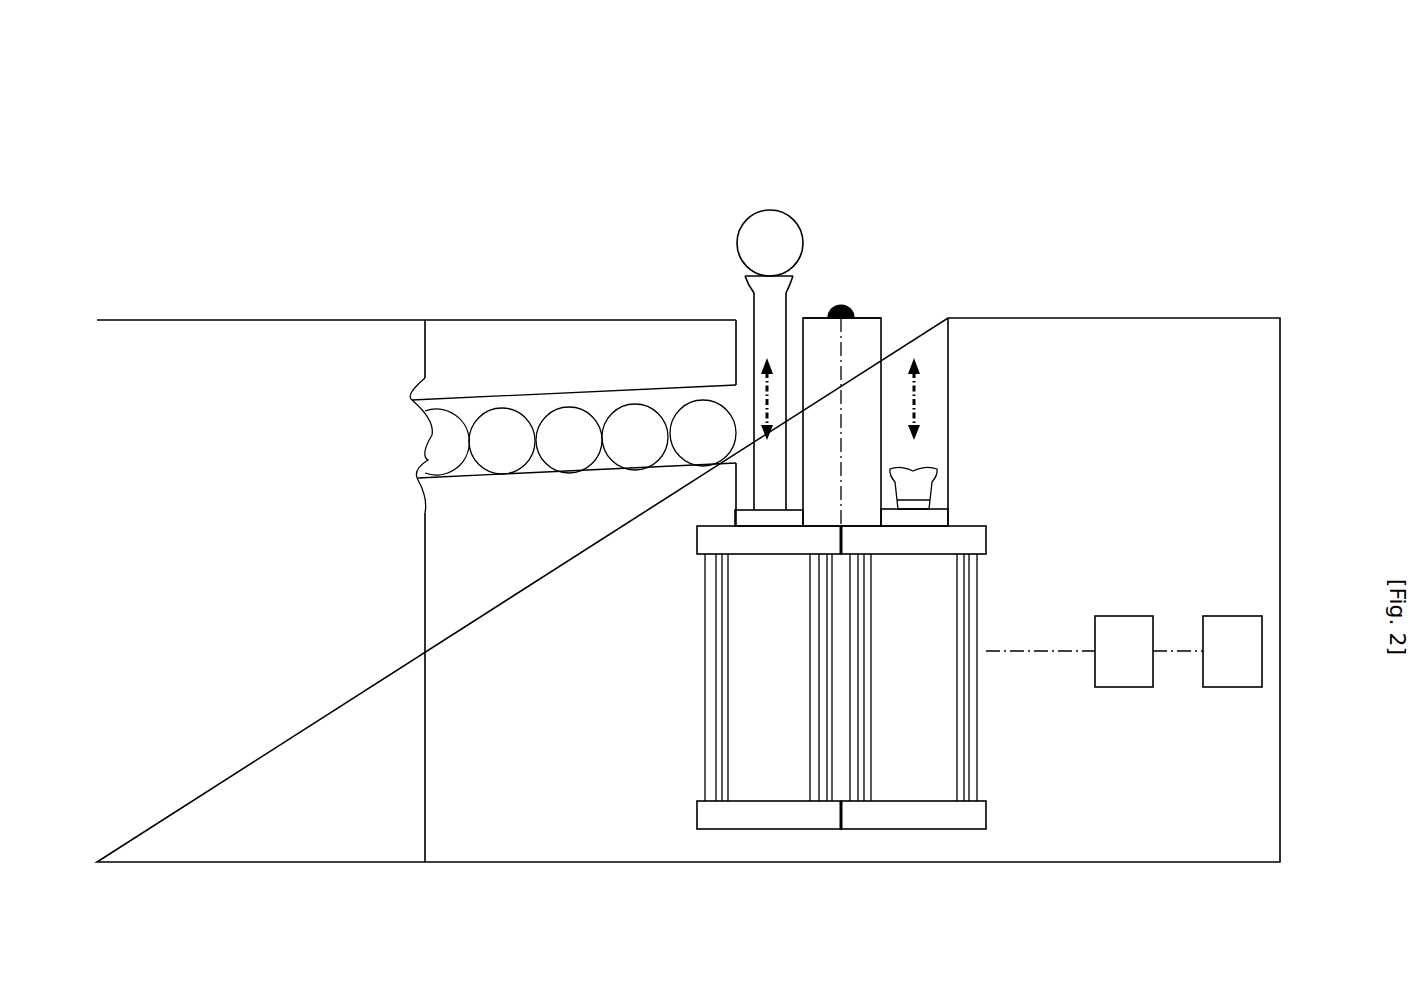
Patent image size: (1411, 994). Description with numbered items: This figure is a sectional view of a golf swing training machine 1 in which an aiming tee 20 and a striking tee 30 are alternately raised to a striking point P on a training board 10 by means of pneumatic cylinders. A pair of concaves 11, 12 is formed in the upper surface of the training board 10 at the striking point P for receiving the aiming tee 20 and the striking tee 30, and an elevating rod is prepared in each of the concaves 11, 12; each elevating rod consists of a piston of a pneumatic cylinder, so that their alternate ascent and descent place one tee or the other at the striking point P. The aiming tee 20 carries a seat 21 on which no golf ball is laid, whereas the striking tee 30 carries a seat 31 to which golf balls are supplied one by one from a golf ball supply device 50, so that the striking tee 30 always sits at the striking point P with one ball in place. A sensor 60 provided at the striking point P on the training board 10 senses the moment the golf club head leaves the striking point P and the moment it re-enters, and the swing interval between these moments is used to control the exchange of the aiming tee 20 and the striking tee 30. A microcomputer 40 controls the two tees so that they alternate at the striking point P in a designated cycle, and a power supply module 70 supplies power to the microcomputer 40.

The golf swing training machine 1 is at (592, 292).
The training board 10 is at (1178, 318).
The concave 11 is at (928, 335).
The concave 12 is at (742, 324).
The aiming tee 20 is at (927, 482).
The seat 21 is at (915, 470).
The striking tee 30 is at (773, 308).
The seat 31 is at (745, 276).
The microcomputer 40 is at (1118, 677).
The golf ball supply device 50 is at (222, 340).
The sensor 60 is at (853, 310).
The power supply module 70 is at (1227, 677).
The striking point P is at (912, 200).